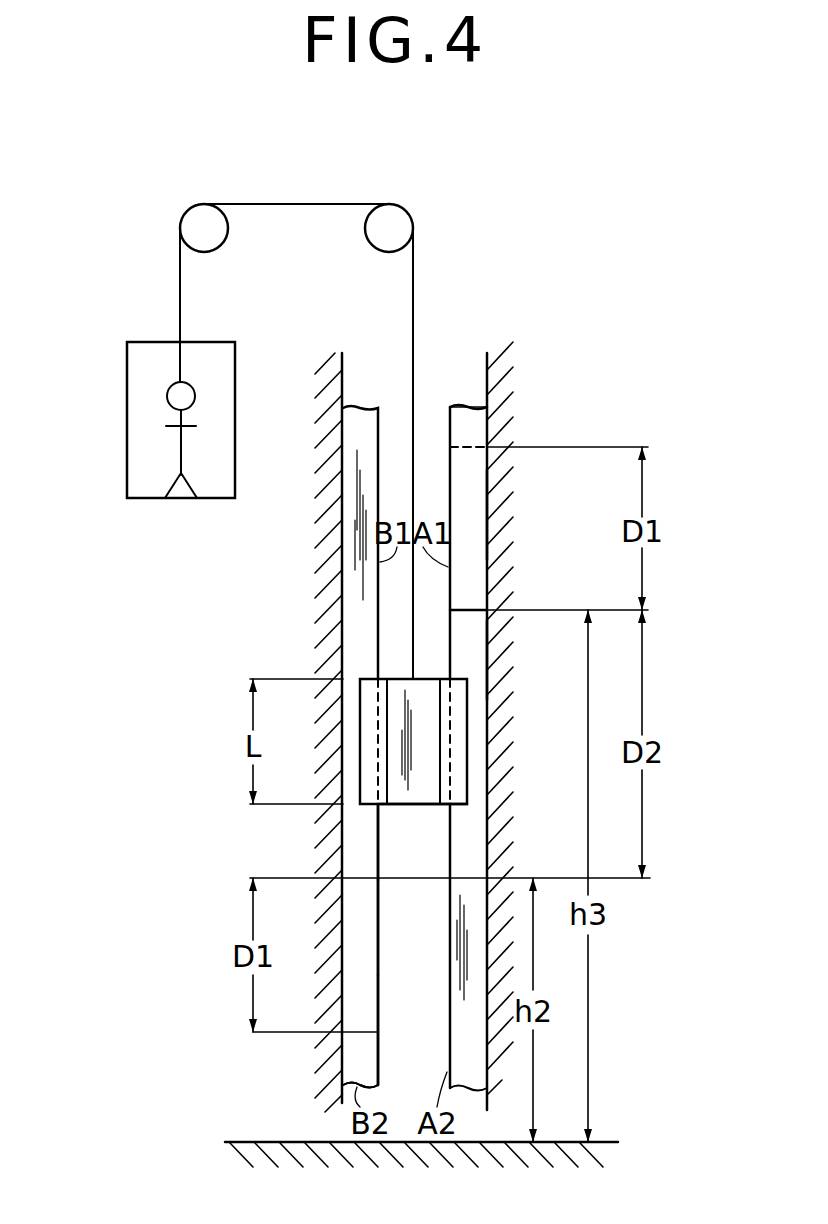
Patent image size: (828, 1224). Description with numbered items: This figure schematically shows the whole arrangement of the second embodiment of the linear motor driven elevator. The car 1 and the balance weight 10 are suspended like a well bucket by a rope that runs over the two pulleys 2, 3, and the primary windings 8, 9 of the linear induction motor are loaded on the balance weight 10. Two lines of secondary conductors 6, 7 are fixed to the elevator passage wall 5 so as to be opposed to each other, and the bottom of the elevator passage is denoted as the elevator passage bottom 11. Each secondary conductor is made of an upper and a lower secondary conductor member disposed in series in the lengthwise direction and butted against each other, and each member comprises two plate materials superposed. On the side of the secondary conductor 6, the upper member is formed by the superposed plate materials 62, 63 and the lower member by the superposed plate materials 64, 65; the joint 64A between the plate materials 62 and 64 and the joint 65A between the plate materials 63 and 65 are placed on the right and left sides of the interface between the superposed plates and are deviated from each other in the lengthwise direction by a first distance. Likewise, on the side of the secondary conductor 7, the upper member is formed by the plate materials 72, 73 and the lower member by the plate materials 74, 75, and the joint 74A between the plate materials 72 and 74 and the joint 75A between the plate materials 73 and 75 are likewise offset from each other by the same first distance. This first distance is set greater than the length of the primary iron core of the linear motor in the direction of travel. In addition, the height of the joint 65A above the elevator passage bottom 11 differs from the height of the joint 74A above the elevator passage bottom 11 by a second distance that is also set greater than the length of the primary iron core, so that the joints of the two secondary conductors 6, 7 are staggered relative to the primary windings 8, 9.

The car 1 is at (127, 438).
The pulley 2 is at (180, 220).
The pulley 3 is at (413, 235).
The elevator passage wall 5 is at (343, 548).
The secondary conductor 6 is at (455, 407).
The secondary conductor 7 is at (362, 407).
The primary winding 8 is at (457, 780).
The primary winding 9 is at (370, 682).
The balance weight 10 is at (397, 802).
The elevator passage bottom 11 is at (600, 1140).
The plate material 62 is at (480, 418).
The plate material 63 is at (472, 497).
The plate material 64 is at (473, 520).
The joint 64A is at (507, 457).
The plate material 65 is at (477, 667).
The joint 65A is at (468, 610).
The plate material 72 is at (380, 842).
The plate material 73 is at (363, 940).
The plate material 74 is at (367, 987).
The joint 74A is at (363, 877).
The plate material 75 is at (363, 1073).
The joint 75A is at (360, 1027).